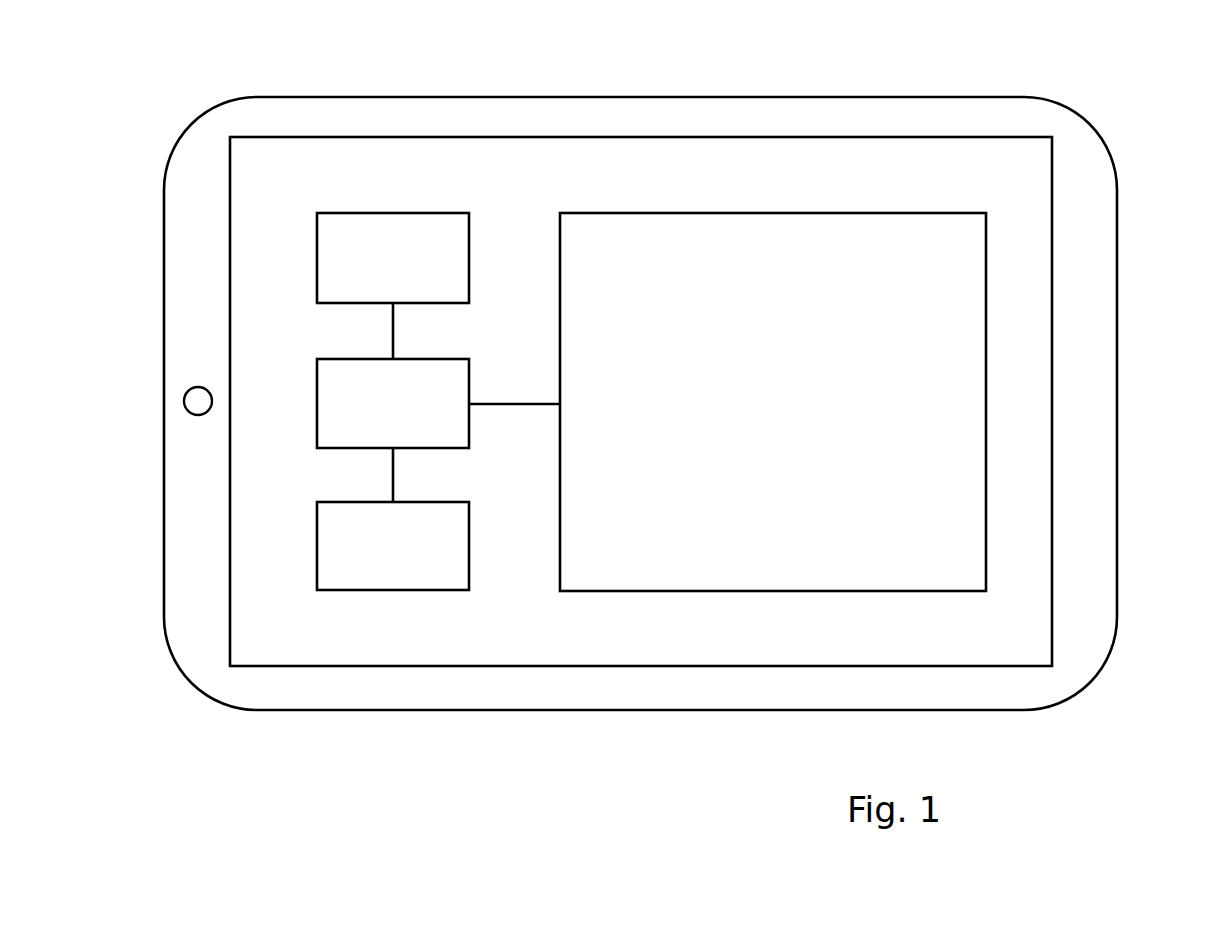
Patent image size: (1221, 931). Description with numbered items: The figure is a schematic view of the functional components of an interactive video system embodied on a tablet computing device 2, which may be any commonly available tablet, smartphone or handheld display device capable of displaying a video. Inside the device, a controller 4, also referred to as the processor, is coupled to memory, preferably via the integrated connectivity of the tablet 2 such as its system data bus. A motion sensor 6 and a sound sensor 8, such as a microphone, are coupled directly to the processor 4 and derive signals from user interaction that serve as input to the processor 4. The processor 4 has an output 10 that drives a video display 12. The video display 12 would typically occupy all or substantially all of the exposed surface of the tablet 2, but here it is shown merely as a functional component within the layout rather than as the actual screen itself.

The tablet computing device 2 is at (1077, 658).
The controller 4 is at (335, 403).
The motion sensor 6 is at (412, 243).
The sound sensor 8 is at (417, 572).
The output 10 is at (519, 404).
The video display 12 is at (958, 547).